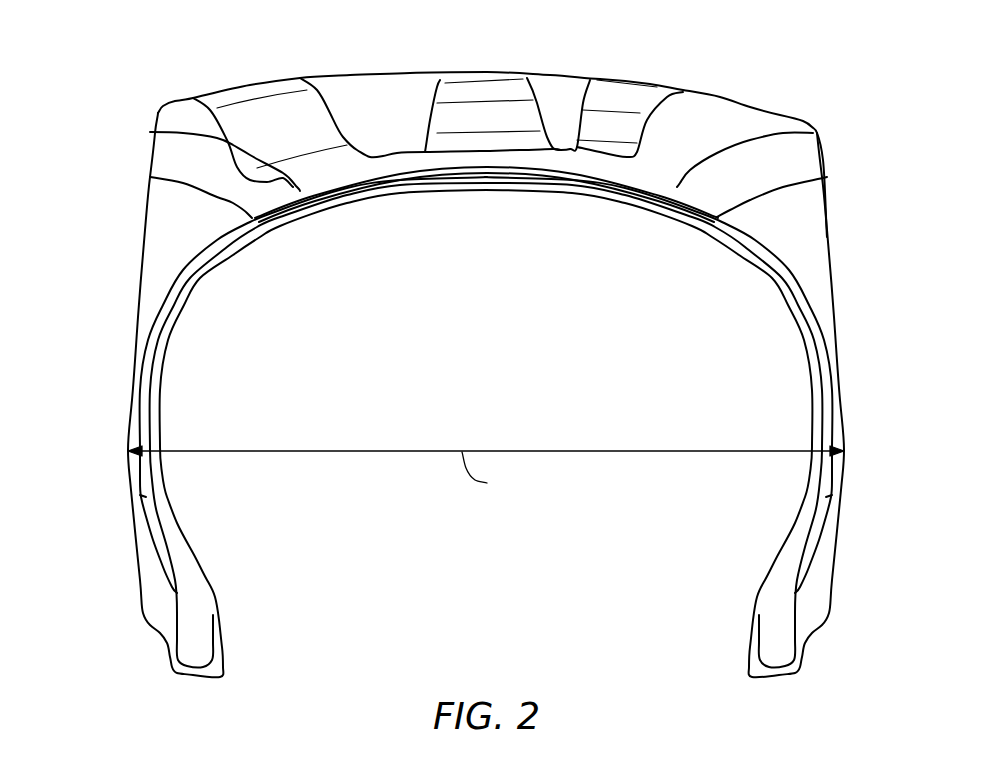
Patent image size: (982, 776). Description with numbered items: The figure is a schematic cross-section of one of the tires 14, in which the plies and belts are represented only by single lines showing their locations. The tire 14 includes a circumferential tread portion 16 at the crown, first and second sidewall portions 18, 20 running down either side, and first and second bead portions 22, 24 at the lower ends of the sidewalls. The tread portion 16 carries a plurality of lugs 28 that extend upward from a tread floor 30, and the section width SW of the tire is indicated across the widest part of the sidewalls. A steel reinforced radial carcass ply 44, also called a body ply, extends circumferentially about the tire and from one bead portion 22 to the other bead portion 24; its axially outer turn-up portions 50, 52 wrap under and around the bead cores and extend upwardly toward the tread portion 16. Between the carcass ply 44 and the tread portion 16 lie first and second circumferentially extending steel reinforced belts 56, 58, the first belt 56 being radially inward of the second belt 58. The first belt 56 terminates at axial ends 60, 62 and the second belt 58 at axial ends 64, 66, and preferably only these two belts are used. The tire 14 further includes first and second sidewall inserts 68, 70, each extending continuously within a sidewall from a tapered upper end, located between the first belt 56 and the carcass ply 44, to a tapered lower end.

The tire 14 is at (770, 70).
The tread portion 16 is at (492, 133).
The first sidewall portion 18 is at (842, 377).
The second sidewall portion 20 is at (130, 422).
The first bead portion 22 is at (780, 647).
The second bead portion 24 is at (188, 647).
The lugs 28 is at (500, 73).
The tread floor 30 is at (397, 153).
The carcass ply 44 is at (150, 413).
The first turn-up portion 50 is at (833, 493).
The second turn-up portion 52 is at (140, 495).
The first belt 56 is at (573, 180).
The second belt 58 is at (498, 168).
The axial end of first belt 60 is at (825, 178).
The axial end of first belt 62 is at (148, 178).
The axial end of second belt 64 is at (815, 132).
The axial end of second belt 66 is at (155, 133).
The first sidewall insert 68 is at (825, 340).
The second sidewall insert 70 is at (148, 340).